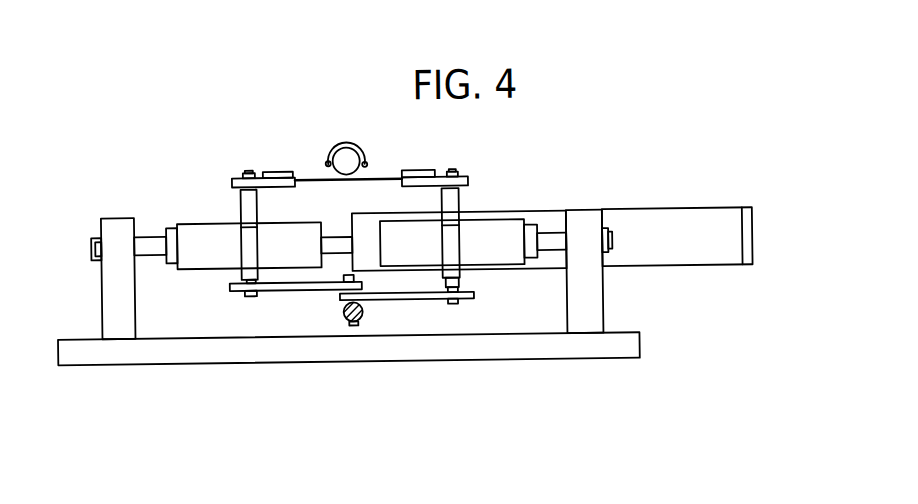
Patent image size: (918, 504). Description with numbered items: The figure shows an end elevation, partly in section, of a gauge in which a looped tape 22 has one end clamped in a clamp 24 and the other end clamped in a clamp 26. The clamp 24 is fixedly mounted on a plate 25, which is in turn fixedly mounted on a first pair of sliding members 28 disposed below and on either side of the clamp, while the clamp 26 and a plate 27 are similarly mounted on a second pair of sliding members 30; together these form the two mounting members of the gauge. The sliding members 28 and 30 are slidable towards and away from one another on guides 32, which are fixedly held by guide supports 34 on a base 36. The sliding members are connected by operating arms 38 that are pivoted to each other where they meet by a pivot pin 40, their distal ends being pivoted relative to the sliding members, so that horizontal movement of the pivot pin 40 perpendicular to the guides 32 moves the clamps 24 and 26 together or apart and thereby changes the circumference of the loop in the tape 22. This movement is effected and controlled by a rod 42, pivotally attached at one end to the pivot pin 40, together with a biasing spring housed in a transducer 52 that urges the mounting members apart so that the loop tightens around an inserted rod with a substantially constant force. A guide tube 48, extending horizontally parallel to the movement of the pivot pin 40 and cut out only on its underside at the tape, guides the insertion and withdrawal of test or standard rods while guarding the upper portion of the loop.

The looped tape 22 is at (379, 178).
The clamp 24 is at (422, 176).
The plate 25 is at (453, 202).
The clamp 26 is at (278, 176).
The plate 27 is at (253, 206).
The first pair of sliding members 28 is at (505, 260).
The second pair of sliding members 30 is at (223, 261).
The guides 32 is at (152, 242).
The guide supports 34 is at (113, 297).
The base 36 is at (521, 349).
The operating arms 38 is at (298, 284).
The pivot pin 40 is at (350, 276).
The rod 42 is at (342, 322).
The guide tube 48 is at (345, 141).
The transducer 52 is at (692, 259).